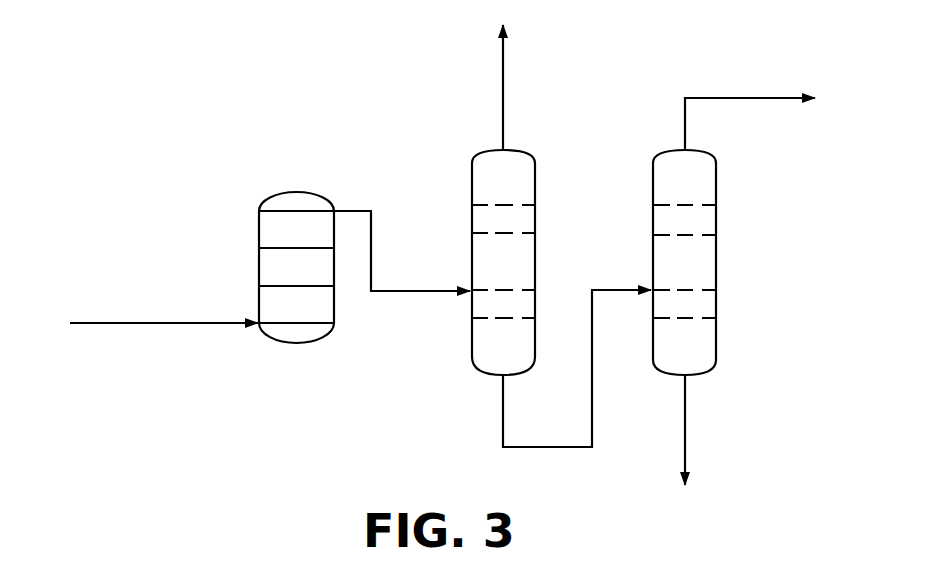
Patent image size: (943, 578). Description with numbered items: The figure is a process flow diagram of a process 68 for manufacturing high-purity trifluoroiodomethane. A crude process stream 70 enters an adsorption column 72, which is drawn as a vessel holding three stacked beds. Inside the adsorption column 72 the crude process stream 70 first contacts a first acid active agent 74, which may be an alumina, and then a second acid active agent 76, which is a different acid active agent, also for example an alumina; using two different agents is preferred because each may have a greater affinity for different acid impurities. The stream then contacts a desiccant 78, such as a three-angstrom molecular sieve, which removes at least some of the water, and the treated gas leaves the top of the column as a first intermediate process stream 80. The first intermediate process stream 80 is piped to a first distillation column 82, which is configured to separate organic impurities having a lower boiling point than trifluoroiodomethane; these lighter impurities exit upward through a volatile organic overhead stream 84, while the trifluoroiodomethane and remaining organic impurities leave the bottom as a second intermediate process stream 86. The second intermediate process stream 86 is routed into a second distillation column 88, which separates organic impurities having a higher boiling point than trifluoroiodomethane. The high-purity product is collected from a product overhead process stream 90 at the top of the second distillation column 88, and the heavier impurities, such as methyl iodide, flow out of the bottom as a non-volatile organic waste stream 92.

The process 68 is at (158, 131).
The crude process stream 70 is at (165, 322).
The adsorption column 72 is at (268, 193).
The first acid active agent 74 is at (325, 309).
The second acid active agent 76 is at (280, 267).
The desiccant 78 is at (280, 228).
The first intermediate process stream 80 is at (371, 211).
The first distillation column 82 is at (472, 163).
The volatile organic overhead stream 84 is at (503, 97).
The second intermediate process stream 86 is at (592, 290).
The second distillation column 88 is at (653, 163).
The product overhead process stream 90 is at (744, 98).
The non-volatile organic waste stream 92 is at (685, 422).